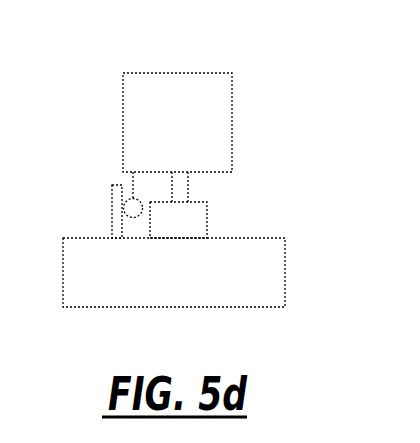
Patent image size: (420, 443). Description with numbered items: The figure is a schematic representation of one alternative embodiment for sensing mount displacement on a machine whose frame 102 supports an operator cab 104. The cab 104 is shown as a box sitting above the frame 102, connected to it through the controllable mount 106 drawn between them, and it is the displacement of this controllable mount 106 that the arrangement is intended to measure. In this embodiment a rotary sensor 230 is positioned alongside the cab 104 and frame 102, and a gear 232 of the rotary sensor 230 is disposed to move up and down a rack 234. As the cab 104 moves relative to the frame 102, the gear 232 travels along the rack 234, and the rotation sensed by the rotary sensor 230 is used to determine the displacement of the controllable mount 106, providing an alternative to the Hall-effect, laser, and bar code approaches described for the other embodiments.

The frame 102 is at (270, 267).
The operator cab 104 is at (200, 73).
The controllable mount 106 is at (248, 184).
The rotary sensor 230 is at (112, 150).
The gear 232 is at (126, 200).
The rack 234 is at (117, 208).